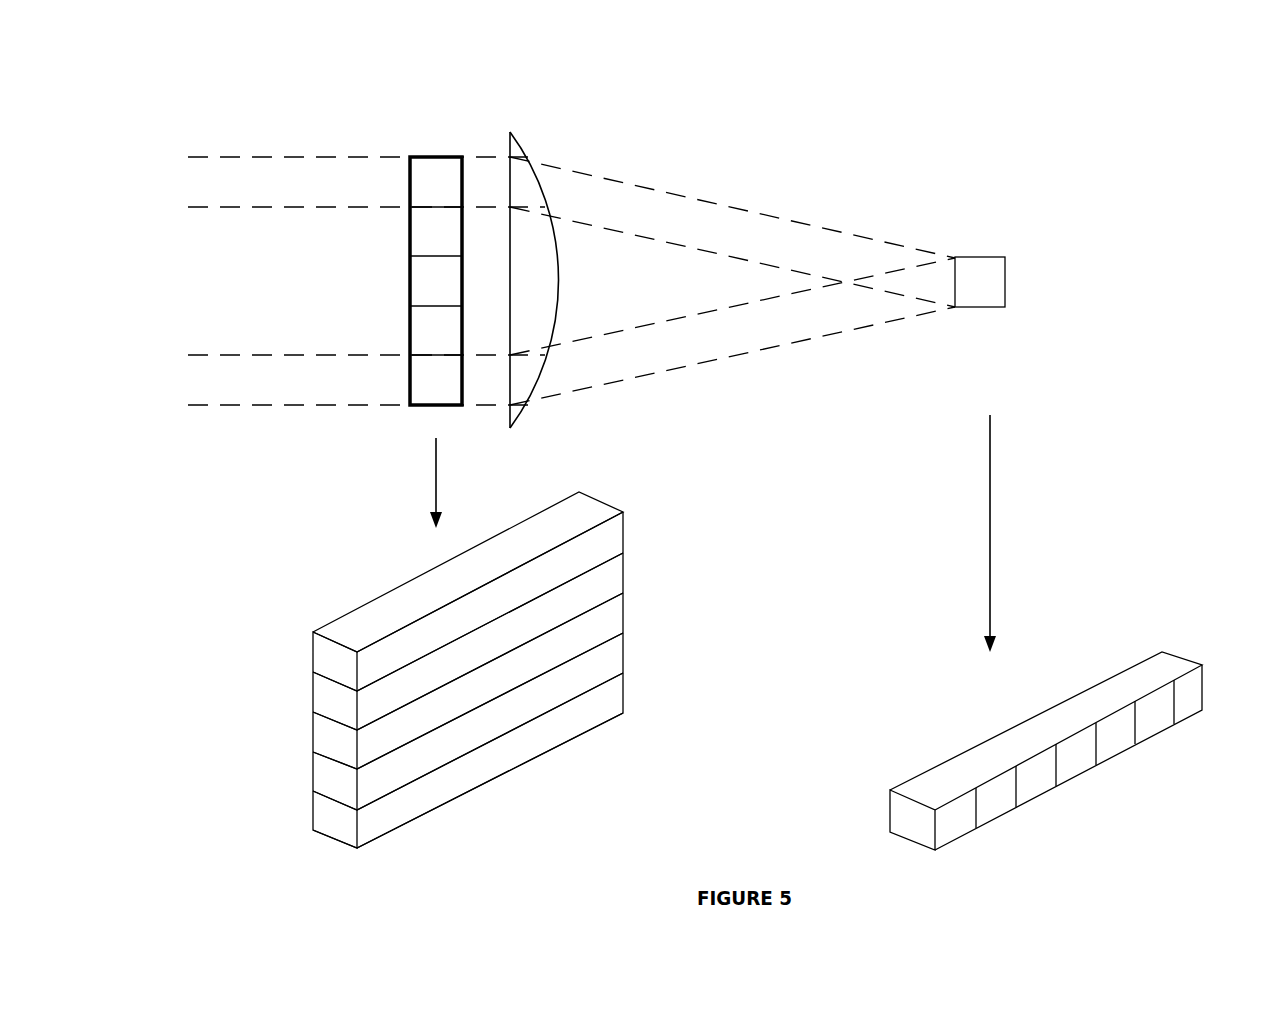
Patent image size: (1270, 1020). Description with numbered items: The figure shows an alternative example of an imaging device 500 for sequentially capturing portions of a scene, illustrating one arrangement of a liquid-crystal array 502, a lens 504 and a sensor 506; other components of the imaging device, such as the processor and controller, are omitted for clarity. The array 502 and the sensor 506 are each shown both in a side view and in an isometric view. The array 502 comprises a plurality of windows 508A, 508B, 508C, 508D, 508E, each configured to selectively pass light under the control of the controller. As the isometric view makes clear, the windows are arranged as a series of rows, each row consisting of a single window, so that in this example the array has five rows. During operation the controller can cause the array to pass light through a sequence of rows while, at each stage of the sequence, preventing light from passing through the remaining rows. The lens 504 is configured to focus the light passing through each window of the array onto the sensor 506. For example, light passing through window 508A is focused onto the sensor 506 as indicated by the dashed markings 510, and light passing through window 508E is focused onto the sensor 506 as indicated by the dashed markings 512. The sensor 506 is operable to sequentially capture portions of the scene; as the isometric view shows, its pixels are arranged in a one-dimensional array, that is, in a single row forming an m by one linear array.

The imaging device 500 is at (738, 140).
The liquid-crystal array 502 is at (474, 456).
The lens 504 is at (529, 162).
The sensor 506 is at (1005, 258).
The window 508A is at (312, 650).
The window 508B is at (622, 577).
The window 508C is at (312, 739).
The window 508D is at (622, 653).
The window 508E is at (312, 813).
The dashed markings 510 is at (219, 151).
The dashed markings 512 is at (351, 405).